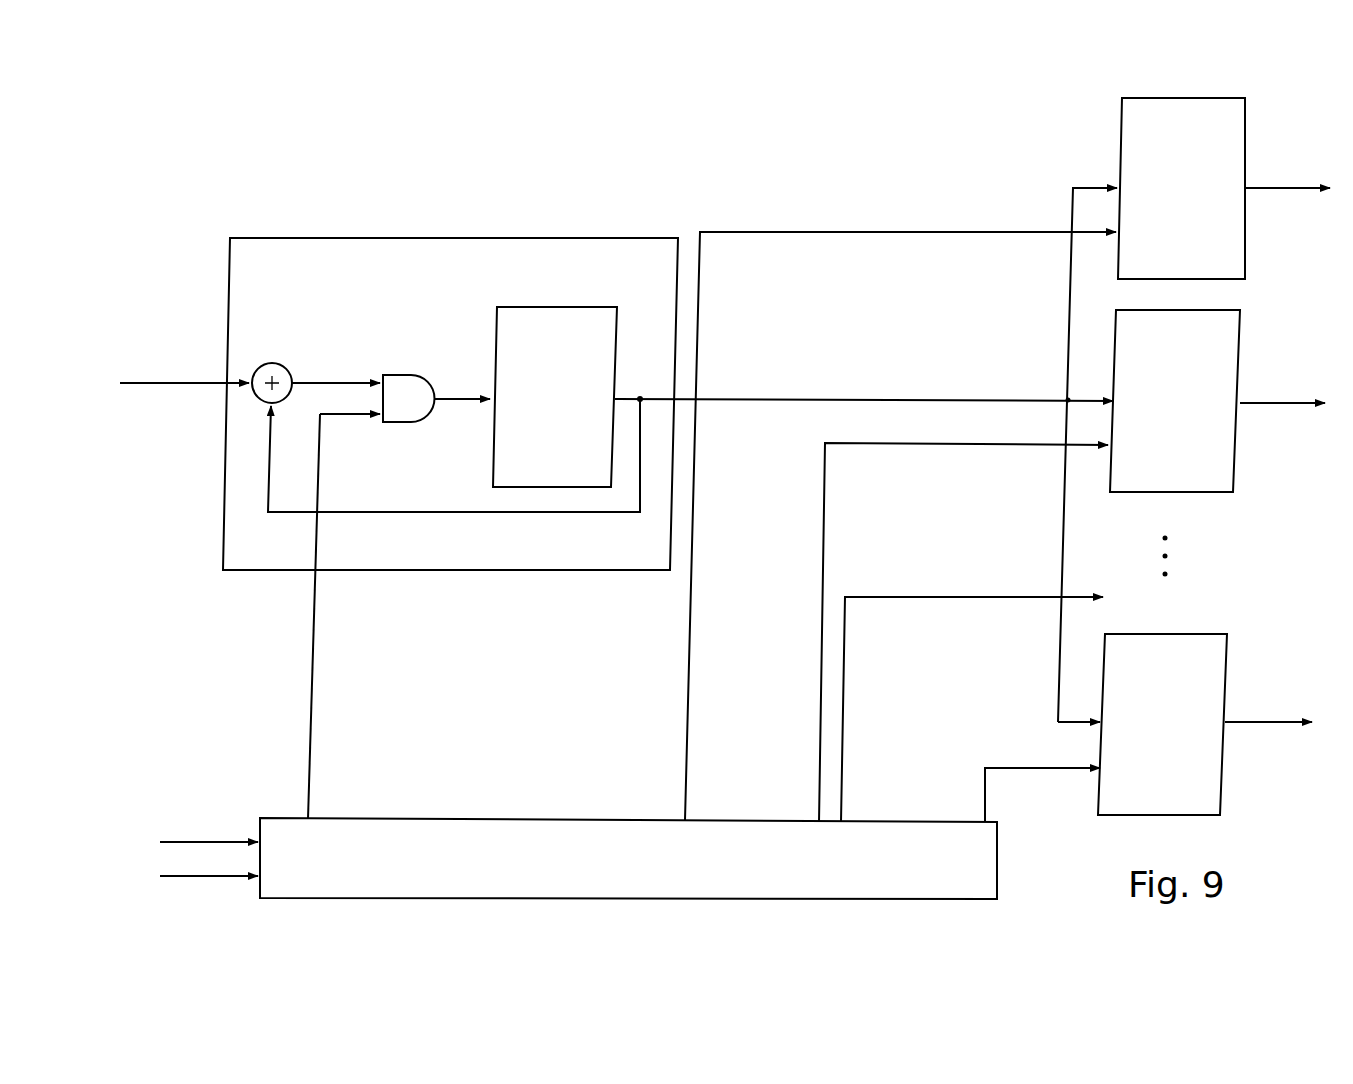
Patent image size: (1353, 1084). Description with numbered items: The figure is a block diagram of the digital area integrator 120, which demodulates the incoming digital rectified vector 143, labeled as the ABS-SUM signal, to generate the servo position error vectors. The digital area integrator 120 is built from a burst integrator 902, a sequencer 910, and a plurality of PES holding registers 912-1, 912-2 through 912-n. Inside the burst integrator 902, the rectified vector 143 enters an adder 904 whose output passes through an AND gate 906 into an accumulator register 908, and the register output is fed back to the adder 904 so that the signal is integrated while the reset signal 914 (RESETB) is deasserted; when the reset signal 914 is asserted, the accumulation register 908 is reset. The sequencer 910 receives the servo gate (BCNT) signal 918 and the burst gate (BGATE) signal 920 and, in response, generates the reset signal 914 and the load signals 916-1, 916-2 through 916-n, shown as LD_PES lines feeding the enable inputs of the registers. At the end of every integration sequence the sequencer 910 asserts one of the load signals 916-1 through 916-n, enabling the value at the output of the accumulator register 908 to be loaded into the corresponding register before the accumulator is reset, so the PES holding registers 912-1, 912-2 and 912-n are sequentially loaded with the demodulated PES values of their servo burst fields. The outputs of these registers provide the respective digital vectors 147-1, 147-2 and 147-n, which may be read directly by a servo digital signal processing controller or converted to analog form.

The digital area integrator 120 is at (163, 150).
The burst integrator 902 is at (272, 238).
The adder 904 is at (284, 366).
The AND gate 906 is at (400, 375).
The accumulator register 908 is at (577, 307).
The digital rectified vector 143 is at (192, 385).
The reset signal 914 is at (316, 660).
The sequencer 910 is at (360, 818).
The burst gate (BGATE) signal 920 is at (190, 840).
The servo gate (BCNT) signal 918 is at (178, 880).
The load signal 916-1 is at (688, 622).
The load signal 916-2 is at (827, 487).
The load signal 916-n is at (1030, 750).
The PES holding register 912-1 is at (1250, 118).
The PES holding register 912-2 is at (1242, 328).
The PES holding register 912-n is at (1230, 650).
The digital vector 147-1 is at (1275, 188).
The digital vector 147-2 is at (1268, 403).
The digital vector 147-n is at (1258, 722).